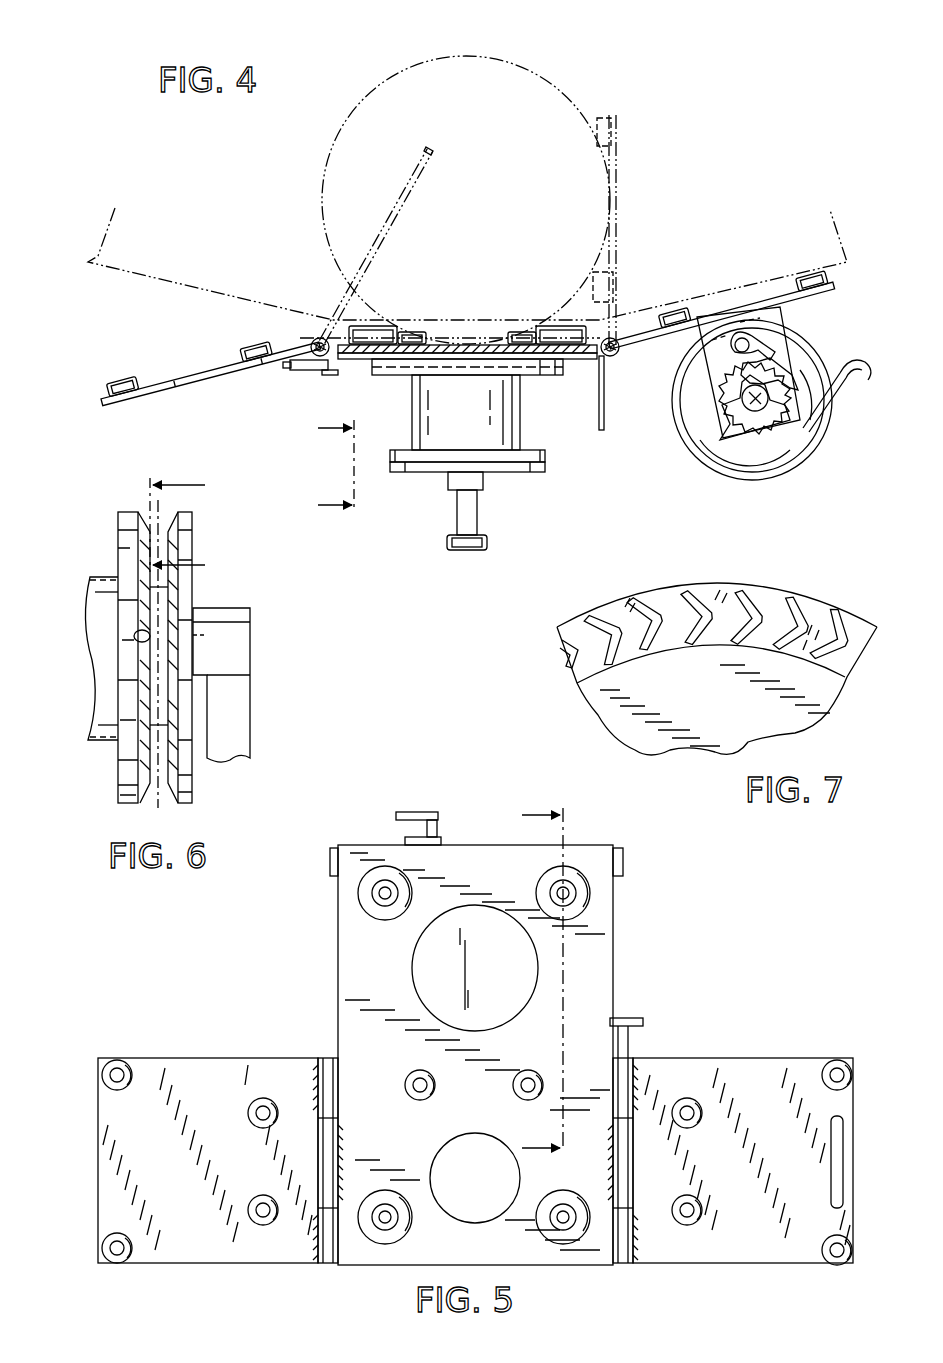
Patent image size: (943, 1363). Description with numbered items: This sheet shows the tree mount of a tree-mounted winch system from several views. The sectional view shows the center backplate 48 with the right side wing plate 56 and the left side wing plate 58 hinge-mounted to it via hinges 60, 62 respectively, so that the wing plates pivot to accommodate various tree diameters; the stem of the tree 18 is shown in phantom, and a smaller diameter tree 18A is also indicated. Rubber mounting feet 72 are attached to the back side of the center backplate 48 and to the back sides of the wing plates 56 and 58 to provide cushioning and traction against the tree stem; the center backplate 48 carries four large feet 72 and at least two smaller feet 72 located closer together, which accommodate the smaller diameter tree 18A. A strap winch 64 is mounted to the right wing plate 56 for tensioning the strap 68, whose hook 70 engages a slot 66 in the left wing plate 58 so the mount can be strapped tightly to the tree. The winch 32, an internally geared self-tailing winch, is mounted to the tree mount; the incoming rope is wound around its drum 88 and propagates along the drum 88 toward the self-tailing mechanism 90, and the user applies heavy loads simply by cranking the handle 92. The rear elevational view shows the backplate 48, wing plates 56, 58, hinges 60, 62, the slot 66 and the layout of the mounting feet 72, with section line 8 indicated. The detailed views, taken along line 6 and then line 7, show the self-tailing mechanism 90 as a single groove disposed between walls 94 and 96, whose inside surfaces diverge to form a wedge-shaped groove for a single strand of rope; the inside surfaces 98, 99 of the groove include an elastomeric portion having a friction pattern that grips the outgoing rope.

In FIG. 4, the tree 18 is at (715, 221).
In FIG. 4, the smaller diameter tree 18A is at (468, 58).
In FIG. 4, the winch 32 is at (505, 424).
In FIG. 4, the center backplate 48 is at (505, 352).
In FIG. 5, the center backplate 48 is at (470, 856).
In FIG. 4, the right side wing plate 56 is at (742, 300).
In FIG. 5, the right side wing plate 56 is at (185, 1073).
In FIG. 4, the left side wing plate 58 is at (200, 318).
In FIG. 5, the left side wing plate 58 is at (742, 1080).
In FIG. 4, the hinge 60 is at (618, 356).
In FIG. 5, the hinge 60 is at (328, 1268).
In FIG. 4, the hinge 62 is at (306, 360).
In FIG. 5, the hinge 62 is at (620, 1250).
In FIG. 4, the strap winch 64 is at (772, 338).
In FIG. 5, the slot 66 is at (838, 1160).
In FIG. 4, the strap 68 is at (812, 450).
In FIG. 4, the hook 70 is at (836, 372).
In FIG. 4, the rubber mounting feet 72 is at (122, 278).
In FIG. 5, the rubber mounting feet 72 is at (102, 1073).
In FIG. 4, the drum 88 is at (445, 402).
In FIG. 6, the drum 88 is at (100, 588).
In FIG. 4, the self-tailing mechanism 90 is at (400, 472).
In FIG. 6, the self-tailing mechanism 90 is at (125, 493).
In FIG. 6, the handle 92 is at (237, 716).
In FIG. 6, the wall 94 is at (120, 520).
In FIG. 7, the wall 94 is at (665, 740).
In FIG. 6, the wall 96 is at (184, 536).
In FIG. 6, the inside surface 98 is at (140, 634).
In FIG. 7, the inside surface 98 is at (665, 607).
In FIG. 6, the inside surface 99 is at (177, 608).
In FIG. 4, the line 6- 6 is at (324, 467).
In FIG. 6, the line 7- 7 is at (186, 526).
In FIG. 5, the section line 8- 8 is at (552, 982).